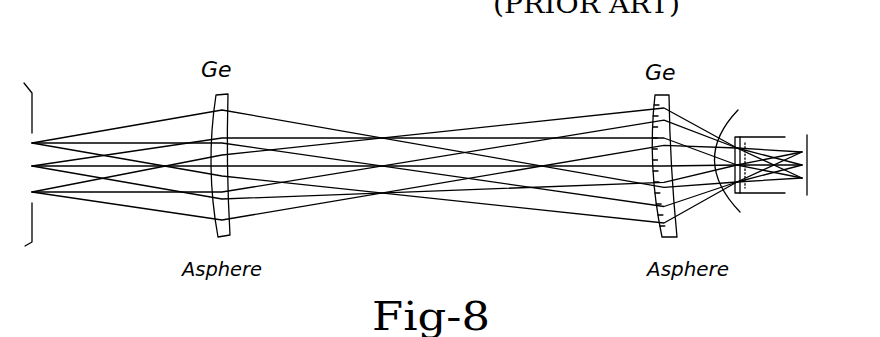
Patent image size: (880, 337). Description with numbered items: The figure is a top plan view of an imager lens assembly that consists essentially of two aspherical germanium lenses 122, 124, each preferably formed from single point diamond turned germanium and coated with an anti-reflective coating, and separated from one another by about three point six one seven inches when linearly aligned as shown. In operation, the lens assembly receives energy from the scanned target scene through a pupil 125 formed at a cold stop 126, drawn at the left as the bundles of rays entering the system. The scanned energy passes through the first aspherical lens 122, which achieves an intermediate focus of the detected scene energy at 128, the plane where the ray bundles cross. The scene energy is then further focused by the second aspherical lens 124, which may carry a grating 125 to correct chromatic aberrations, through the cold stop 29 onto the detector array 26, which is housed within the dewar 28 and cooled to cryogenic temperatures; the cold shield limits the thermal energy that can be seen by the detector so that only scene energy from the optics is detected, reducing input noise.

The first aspherical germanium lens 122 is at (222, 101).
The second aspherical germanium lens 124 is at (665, 99).
The pupil 125 is at (26, 245).
The cold stop 126 is at (42, 142).
The intermediate focus 128 is at (376, 108).
The cold shield 29 is at (739, 136).
The dewar 28 is at (738, 214).
The detector array 26 is at (809, 135).